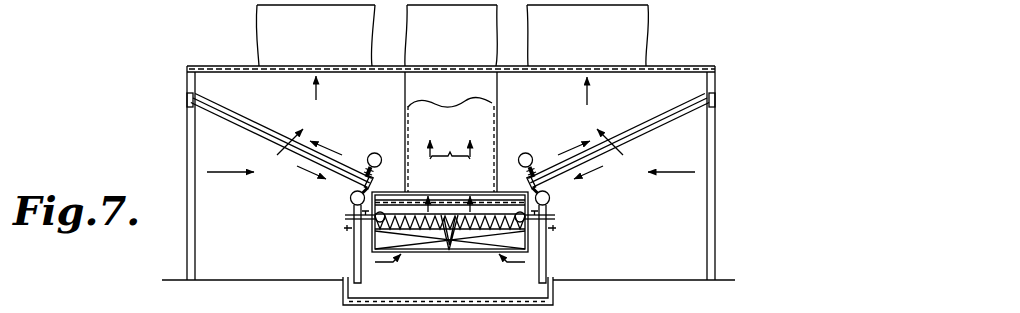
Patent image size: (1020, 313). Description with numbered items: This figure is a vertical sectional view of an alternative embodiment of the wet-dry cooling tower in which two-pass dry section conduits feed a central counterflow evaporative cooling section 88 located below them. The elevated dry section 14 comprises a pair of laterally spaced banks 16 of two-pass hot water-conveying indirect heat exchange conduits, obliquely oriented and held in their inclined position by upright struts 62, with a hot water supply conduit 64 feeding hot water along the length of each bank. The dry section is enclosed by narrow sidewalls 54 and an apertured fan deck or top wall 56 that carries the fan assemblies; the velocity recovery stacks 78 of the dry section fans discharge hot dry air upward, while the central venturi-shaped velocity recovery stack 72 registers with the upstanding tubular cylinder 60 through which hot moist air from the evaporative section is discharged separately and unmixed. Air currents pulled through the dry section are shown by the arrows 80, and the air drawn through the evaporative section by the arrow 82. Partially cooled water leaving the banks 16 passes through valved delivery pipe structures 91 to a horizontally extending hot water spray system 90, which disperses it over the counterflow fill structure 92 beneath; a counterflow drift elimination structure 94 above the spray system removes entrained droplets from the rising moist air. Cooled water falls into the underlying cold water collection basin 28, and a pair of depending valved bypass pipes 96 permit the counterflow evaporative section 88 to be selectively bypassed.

The dry surface water cooling section 14 is at (185, 68).
The banks of two-pass hot water-conveying indirect heat exchange conduits 16 is at (267, 107).
The cold water collection basin 28 is at (553, 299).
The sidewalls 54 is at (187, 97).
The fan deck or top wall 56 is at (557, 67).
The tubular cylinders 60 is at (498, 88).
The upright struts 62 is at (187, 251).
The hot water supply conduit 64 is at (380, 153).
The venturi-shaped velocity recovery stack 72 is at (489, 31).
The velocity recovery stack 78 is at (259, 22).
The arrows 80 is at (318, 99).
The arrow 82 is at (597, 262).
The counterflow evaporative cooling section 88 is at (557, 220).
The hot water spray system 90 is at (448, 251).
The valved delivery pipe structures 91 is at (351, 204).
The counterflow fill structure 92 is at (478, 253).
The counterflow drift elimination structure 94 is at (449, 200).
The valved bypass pipes 96 is at (353, 246).